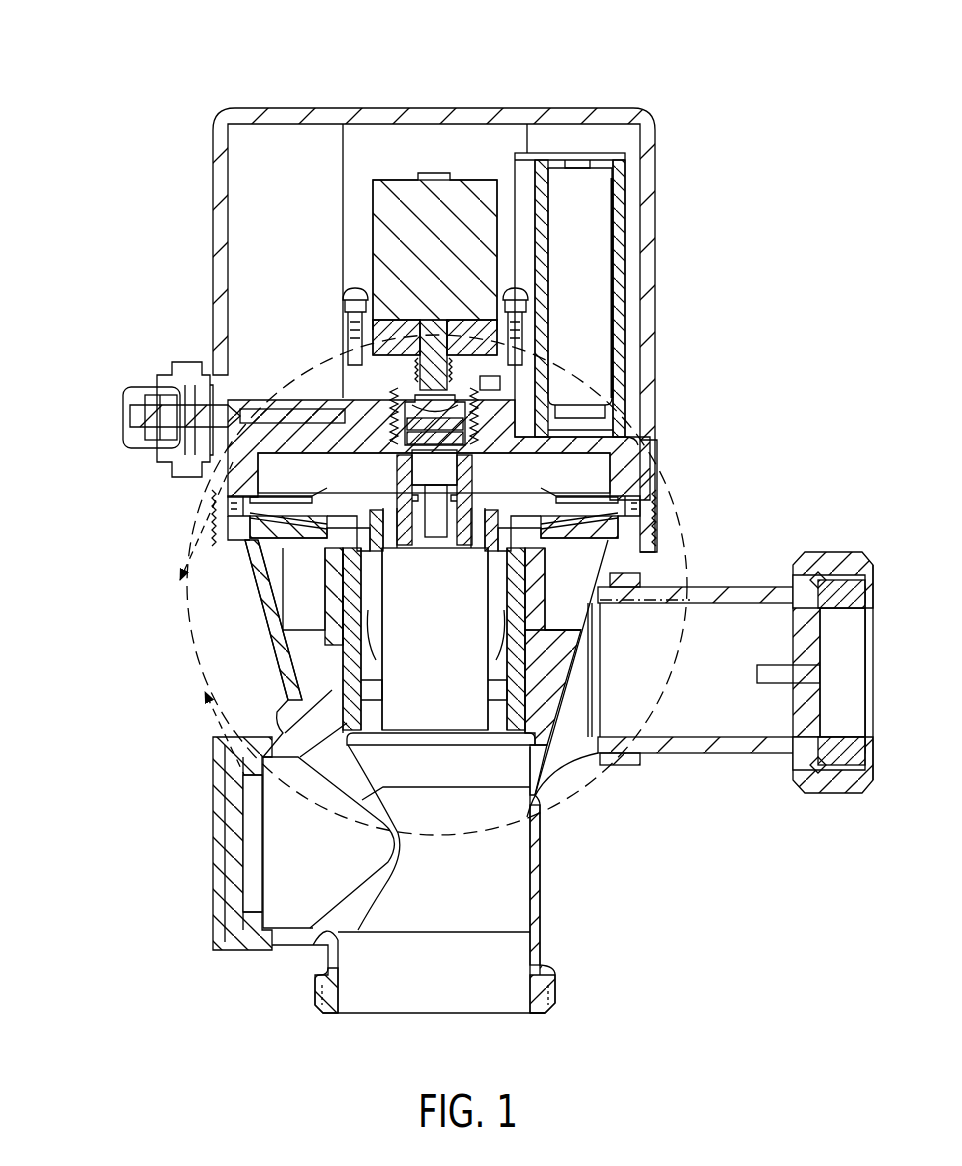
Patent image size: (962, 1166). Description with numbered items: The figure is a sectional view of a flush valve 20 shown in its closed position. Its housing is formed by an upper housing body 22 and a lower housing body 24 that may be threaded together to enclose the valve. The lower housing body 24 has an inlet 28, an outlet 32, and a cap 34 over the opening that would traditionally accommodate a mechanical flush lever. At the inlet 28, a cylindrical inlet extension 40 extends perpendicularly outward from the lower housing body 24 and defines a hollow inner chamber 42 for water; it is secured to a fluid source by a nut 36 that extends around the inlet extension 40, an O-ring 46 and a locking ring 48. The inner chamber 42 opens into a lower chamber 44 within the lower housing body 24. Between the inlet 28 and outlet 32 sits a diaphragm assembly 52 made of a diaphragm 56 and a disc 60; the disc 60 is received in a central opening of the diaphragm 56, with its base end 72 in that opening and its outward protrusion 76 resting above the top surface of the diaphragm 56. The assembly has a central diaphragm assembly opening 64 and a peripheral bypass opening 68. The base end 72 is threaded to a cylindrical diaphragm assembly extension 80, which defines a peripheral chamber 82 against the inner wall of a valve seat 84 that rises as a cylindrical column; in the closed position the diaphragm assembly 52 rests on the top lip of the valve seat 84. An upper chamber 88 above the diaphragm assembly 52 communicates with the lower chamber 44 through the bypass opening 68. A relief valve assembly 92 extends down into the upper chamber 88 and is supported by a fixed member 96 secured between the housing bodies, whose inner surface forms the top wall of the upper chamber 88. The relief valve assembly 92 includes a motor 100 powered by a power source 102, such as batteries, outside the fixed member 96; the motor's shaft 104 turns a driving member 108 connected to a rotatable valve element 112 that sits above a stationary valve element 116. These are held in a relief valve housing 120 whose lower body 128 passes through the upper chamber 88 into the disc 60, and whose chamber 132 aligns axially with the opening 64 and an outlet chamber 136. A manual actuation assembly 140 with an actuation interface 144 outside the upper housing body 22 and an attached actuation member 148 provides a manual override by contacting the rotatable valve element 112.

The flush valve 20 is at (745, 45).
The upper housing body 22 is at (268, 107).
The lower housing body 24 is at (542, 896).
The inlet 28 is at (873, 663).
The outlet 32 is at (456, 1014).
The cap 34 is at (213, 843).
The nut 36 is at (810, 553).
The inlet extension 40 is at (757, 745).
The inner chamber 42 is at (694, 698).
The lower chamber 44 is at (283, 612).
The O-ring 46 is at (862, 758).
The locking ring 48 is at (827, 777).
The diaphragm assembly 52 is at (370, 498).
The diaphragm 56 is at (256, 552).
The disc 60 is at (322, 486).
The diaphragm assembly opening 64 is at (440, 552).
The bypass opening 68 is at (582, 500).
The base end 72 is at (412, 500).
The outward protrusion 76 is at (518, 506).
The diaphragm assembly extension 80 is at (373, 703).
The peripheral chamber 82 is at (362, 618).
The valve seat 84 is at (534, 627).
The upper chamber 88 is at (593, 473).
The relief valve assembly 92 is at (403, 370).
The fixed member 96 is at (397, 383).
The motor 100 is at (452, 207).
The power source 102 is at (592, 197).
The shaft 104 is at (432, 348).
The driving member 108 is at (470, 358).
The rotatable valve element 112 is at (482, 388).
The stationary valve element 116 is at (470, 450).
The relief valve housing 120 is at (392, 408).
The lower body 128 is at (476, 500).
The chamber 132 is at (440, 452).
The outlet chamber 136 is at (418, 703).
The manual actuation assembly 140 is at (133, 463).
The actuation interface 144 is at (132, 412).
The actuation member 148 is at (152, 402).